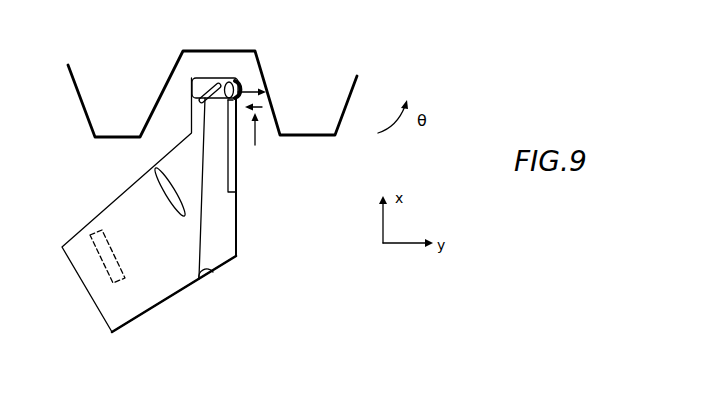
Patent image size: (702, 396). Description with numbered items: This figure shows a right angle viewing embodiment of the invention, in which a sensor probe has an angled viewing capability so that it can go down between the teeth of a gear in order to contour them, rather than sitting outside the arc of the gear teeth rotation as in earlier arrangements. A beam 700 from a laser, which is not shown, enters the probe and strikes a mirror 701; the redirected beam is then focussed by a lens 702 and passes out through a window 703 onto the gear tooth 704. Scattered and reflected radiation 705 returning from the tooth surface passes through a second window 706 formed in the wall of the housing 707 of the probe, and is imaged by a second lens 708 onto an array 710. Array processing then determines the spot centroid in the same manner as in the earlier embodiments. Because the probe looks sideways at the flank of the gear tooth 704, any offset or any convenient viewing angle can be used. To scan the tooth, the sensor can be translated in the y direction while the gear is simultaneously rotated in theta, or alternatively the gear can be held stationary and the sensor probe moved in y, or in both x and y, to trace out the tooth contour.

The beam 700 is at (212, 276).
The mirror 701 is at (206, 95).
The lens 702 is at (231, 78).
The window 703 is at (248, 79).
The gear tooth 704 is at (328, 129).
The scattered and reflected radiation 705 is at (255, 145).
The window 706 is at (240, 186).
The housing 707 is at (237, 249).
The lens 708 is at (156, 169).
The array 710 is at (94, 232).